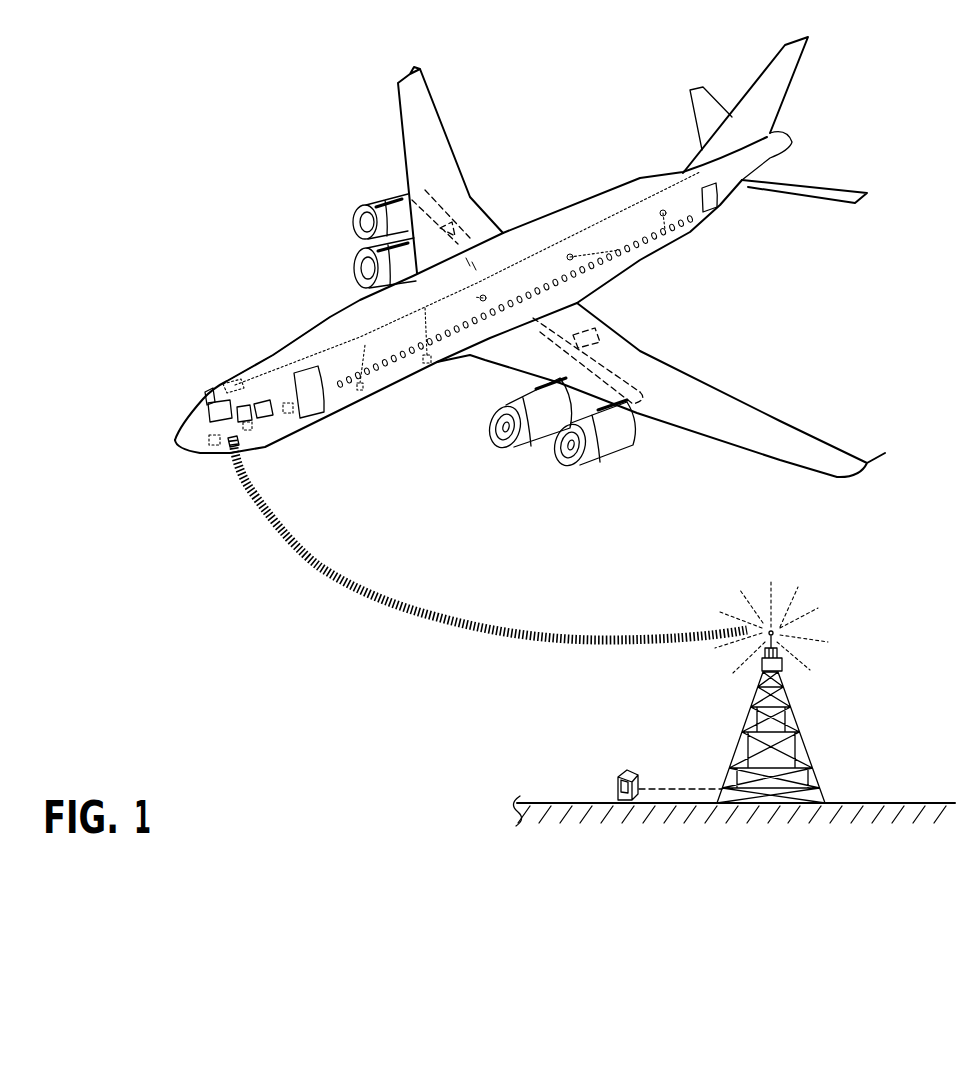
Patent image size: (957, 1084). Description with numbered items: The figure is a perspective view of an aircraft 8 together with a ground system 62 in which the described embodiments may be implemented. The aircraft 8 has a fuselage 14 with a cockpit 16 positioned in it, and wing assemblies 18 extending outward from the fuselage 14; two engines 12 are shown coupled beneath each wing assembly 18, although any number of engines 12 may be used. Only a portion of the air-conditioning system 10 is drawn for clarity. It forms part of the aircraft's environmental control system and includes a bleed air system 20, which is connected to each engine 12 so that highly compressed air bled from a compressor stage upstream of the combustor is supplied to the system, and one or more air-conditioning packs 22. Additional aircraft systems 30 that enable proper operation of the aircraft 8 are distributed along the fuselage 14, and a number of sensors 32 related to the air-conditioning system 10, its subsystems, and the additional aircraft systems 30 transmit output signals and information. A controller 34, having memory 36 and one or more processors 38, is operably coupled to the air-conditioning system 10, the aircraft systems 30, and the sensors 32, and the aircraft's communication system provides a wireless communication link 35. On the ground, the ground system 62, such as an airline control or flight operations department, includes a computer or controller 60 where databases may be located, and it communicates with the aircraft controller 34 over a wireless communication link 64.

The aircraft 8 is at (195, 341).
The air-conditioning system 10 is at (600, 330).
The engines 12 is at (363, 197).
The fuselage 14 is at (583, 200).
The cockpit 16 is at (312, 333).
The wing assemblies 18 is at (412, 105).
The bleed air system 20 is at (617, 353).
The air-conditioning packs 22 is at (460, 235).
The additional aircraft systems 30 is at (212, 446).
The sensors 32 is at (383, 190).
The controller 34 is at (258, 400).
The wireless communication link 35 is at (230, 446).
The memory 36 is at (240, 377).
The processors 38 is at (208, 387).
The controller 60 is at (620, 777).
The ground system 62 is at (808, 716).
The wireless communication link 64 is at (767, 632).